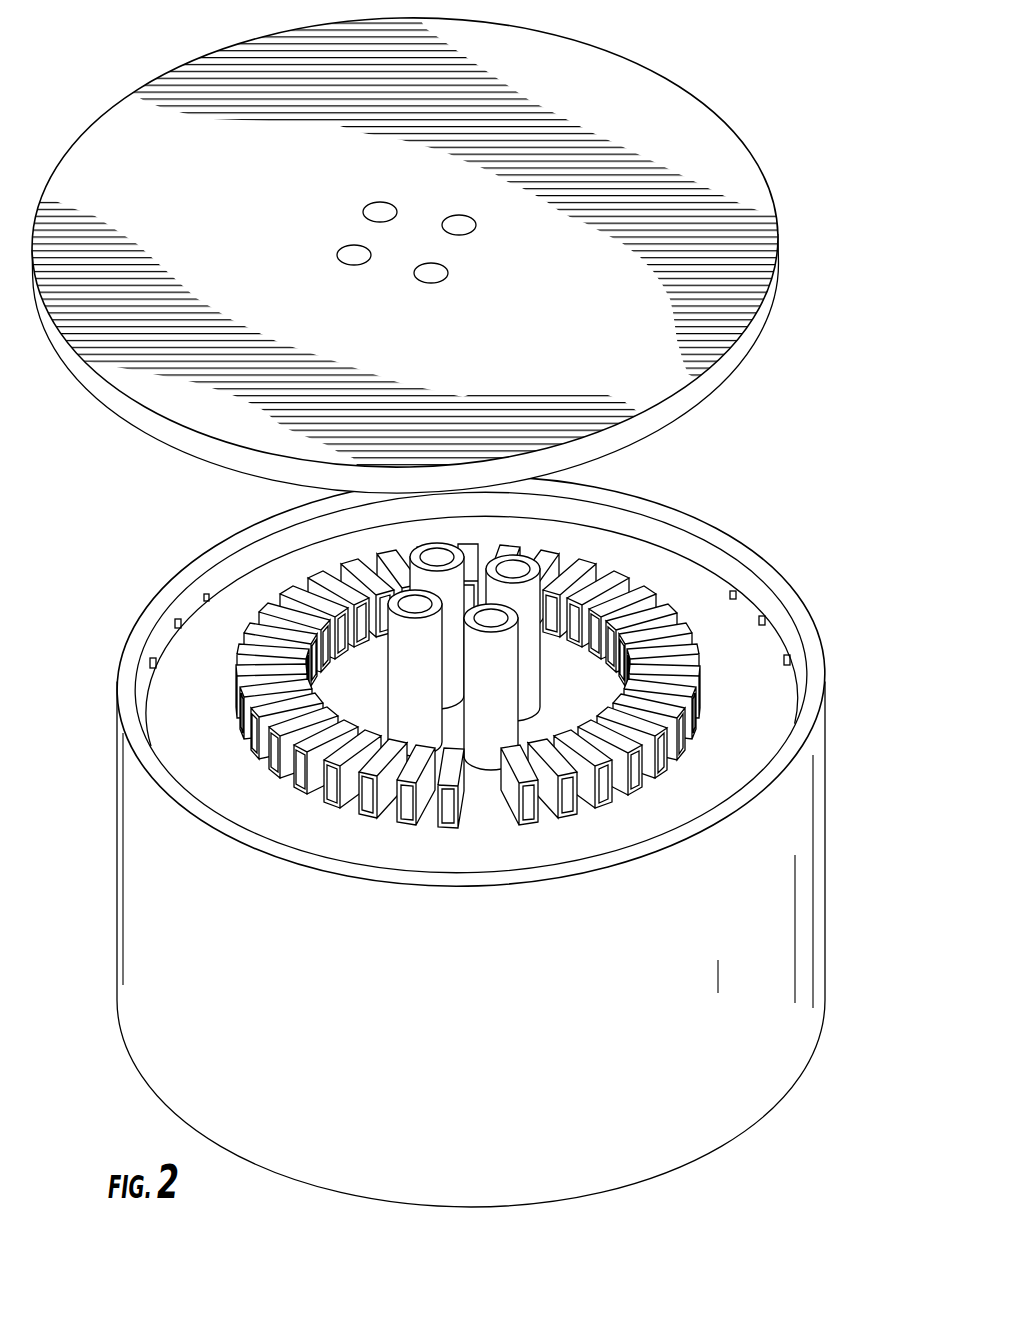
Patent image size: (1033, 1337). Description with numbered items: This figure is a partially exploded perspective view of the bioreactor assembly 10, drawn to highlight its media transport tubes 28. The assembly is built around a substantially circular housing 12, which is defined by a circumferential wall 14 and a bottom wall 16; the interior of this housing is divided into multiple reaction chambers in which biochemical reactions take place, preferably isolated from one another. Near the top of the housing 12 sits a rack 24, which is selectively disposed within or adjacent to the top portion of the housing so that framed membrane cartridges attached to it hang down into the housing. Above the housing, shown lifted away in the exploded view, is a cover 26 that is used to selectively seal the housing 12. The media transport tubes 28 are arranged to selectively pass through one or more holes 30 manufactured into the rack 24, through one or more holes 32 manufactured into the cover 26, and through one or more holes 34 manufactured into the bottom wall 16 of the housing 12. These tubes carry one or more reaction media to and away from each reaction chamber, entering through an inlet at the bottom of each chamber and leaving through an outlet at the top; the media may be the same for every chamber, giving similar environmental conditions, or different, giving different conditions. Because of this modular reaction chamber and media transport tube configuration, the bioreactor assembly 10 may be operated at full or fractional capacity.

The bioreactor assembly 10 is at (439, 612).
The housing 12 is at (489, 843).
The circumferential wall 14 is at (779, 587).
The bottom wall 16 is at (485, 954).
The rack 24 is at (658, 549).
The cover 26 is at (395, 250).
The media transport tubes 28 is at (400, 654).
The holes 30 is at (453, 712).
The holes 32 is at (395, 237).
The holes 34 is at (672, 1186).